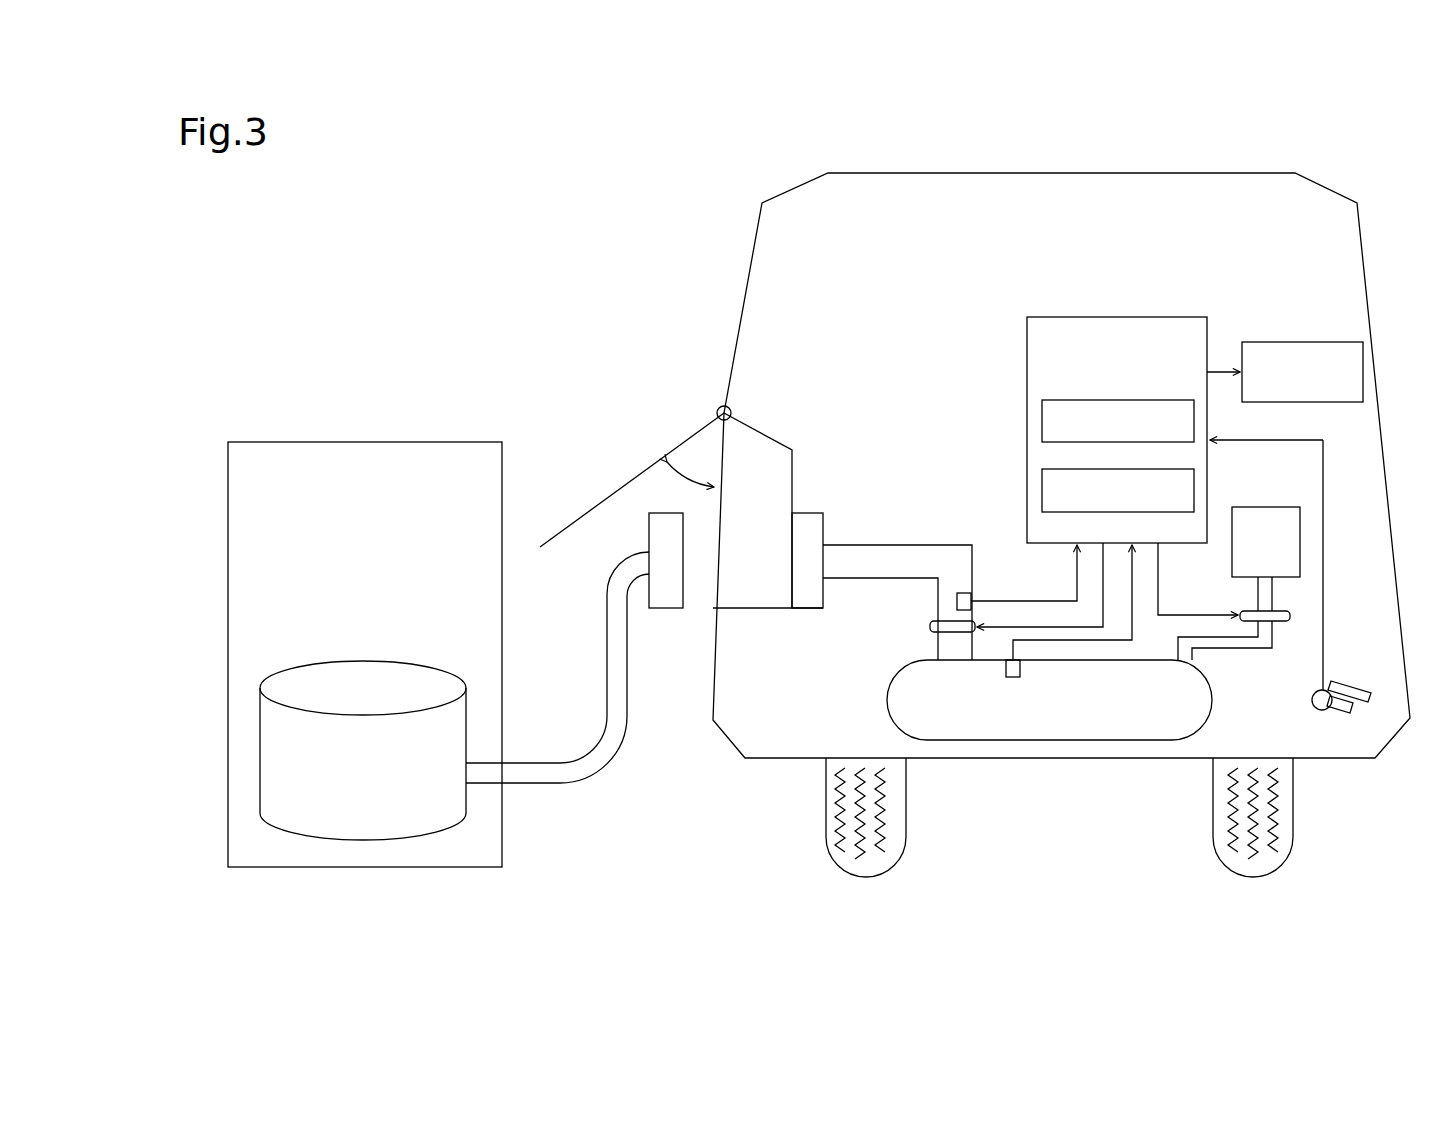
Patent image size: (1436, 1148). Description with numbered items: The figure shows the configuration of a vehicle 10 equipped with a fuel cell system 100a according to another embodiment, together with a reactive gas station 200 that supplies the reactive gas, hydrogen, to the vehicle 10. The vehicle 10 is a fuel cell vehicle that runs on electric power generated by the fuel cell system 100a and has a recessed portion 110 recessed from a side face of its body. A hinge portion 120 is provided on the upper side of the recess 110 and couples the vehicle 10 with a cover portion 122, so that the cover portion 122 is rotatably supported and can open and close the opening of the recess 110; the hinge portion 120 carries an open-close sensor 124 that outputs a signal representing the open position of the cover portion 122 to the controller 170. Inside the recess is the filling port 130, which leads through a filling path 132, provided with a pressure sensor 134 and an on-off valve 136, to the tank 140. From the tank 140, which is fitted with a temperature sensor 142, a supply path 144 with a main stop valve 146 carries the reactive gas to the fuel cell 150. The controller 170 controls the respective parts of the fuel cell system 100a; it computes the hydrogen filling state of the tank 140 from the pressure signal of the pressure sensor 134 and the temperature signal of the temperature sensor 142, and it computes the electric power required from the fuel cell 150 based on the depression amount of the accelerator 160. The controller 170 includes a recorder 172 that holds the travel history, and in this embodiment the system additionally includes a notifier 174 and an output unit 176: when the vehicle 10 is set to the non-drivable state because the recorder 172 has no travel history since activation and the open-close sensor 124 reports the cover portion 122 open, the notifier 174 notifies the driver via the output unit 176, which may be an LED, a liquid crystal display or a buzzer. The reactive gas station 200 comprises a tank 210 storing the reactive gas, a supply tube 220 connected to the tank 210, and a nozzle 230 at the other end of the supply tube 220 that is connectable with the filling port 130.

The vehicle 10 is at (1280, 173).
The fuel cell system 100a is at (1043, 278).
The recessed portion 110 is at (733, 608).
The hinge portion 120 is at (718, 406).
The cover portion 122 is at (625, 485).
The open-close sensor 124 is at (689, 410).
The filling port 130 is at (813, 608).
The filling path 132 is at (900, 545).
The pressure sensor 134 is at (957, 601).
The on-off valve 136 is at (930, 627).
The tank 140 is at (1068, 715).
The temperature sensor 142 is at (1013, 677).
The supply path 144 is at (1238, 650).
The main stop valve 146 is at (1283, 621).
The fuel cell 150 is at (1268, 507).
The accelerator 160 is at (1385, 688).
The controller 170 is at (1135, 317).
The recorder 172 is at (1148, 385).
The notifier 174 is at (1148, 455).
The output unit 176 is at (1325, 327).
The reactive gas station 200 is at (362, 442).
The tank 210 is at (363, 660).
The supply tube 220 is at (577, 781).
The nozzle 230 is at (665, 608).